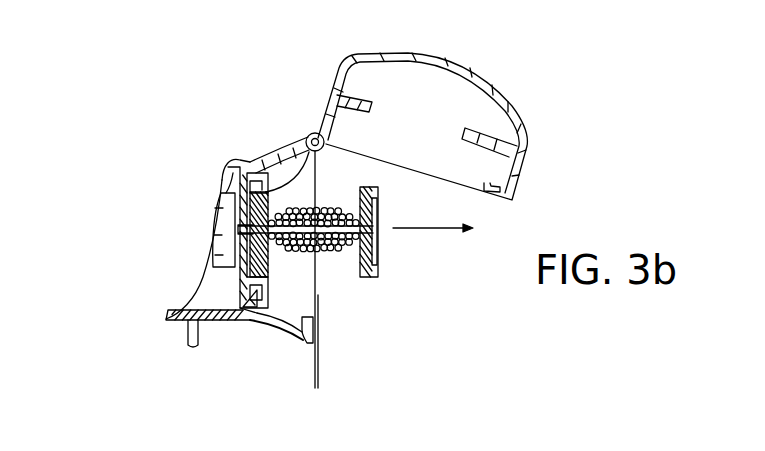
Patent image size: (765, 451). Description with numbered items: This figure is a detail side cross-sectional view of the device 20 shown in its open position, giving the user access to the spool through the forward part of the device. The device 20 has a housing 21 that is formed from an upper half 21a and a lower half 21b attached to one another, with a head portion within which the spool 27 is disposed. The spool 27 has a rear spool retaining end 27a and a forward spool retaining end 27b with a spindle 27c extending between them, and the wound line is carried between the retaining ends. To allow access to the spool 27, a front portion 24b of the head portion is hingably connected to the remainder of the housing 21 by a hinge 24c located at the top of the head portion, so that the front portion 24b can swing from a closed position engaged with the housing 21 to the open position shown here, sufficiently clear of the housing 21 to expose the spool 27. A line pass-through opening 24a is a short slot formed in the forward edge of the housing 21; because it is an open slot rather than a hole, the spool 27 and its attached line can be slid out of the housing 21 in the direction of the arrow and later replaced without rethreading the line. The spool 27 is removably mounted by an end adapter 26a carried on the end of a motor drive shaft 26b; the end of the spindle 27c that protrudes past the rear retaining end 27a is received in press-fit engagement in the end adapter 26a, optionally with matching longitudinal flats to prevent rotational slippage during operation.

The device 20 is at (230, 112).
The housing 21 is at (87, 180).
The upper half 21a is at (224, 166).
The lower half 21b is at (170, 322).
The line pass-through opening 24a is at (313, 343).
The front portion 24b is at (484, 75).
The hinge 24c is at (310, 133).
The end adapter 26a is at (250, 282).
The motor drive shaft 26b is at (294, 147).
The spool 27 is at (448, 302).
The rear spool retaining end 27a is at (270, 258).
The forward spool retaining end 27b is at (365, 266).
The spindle 27c is at (337, 250).